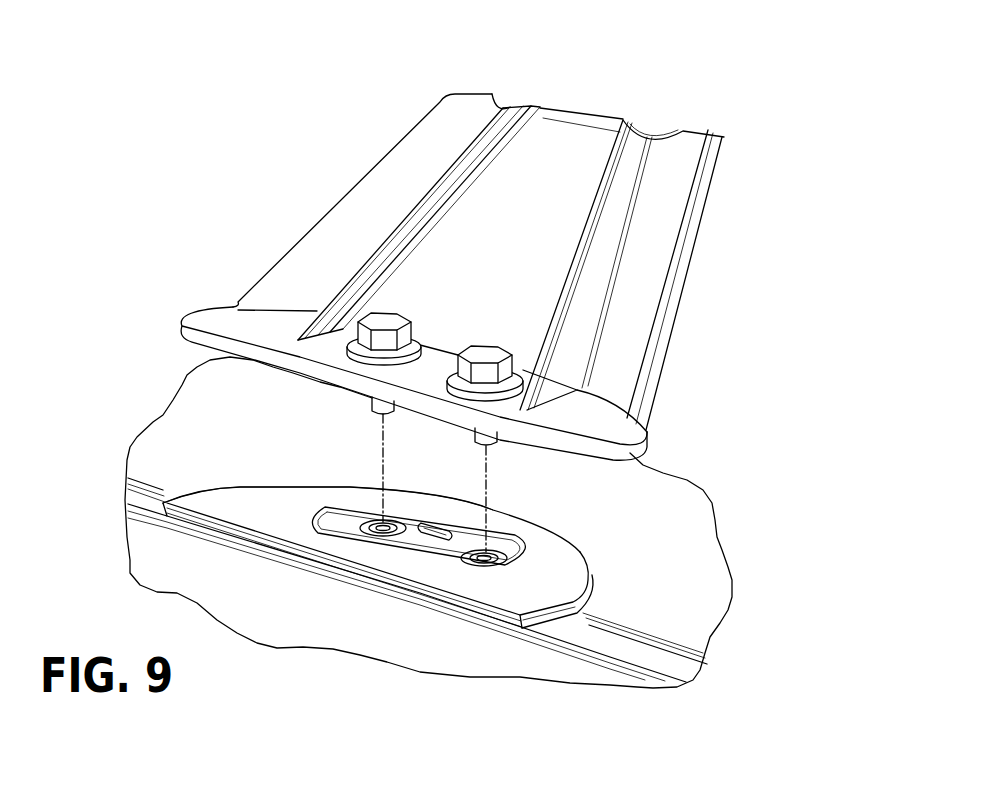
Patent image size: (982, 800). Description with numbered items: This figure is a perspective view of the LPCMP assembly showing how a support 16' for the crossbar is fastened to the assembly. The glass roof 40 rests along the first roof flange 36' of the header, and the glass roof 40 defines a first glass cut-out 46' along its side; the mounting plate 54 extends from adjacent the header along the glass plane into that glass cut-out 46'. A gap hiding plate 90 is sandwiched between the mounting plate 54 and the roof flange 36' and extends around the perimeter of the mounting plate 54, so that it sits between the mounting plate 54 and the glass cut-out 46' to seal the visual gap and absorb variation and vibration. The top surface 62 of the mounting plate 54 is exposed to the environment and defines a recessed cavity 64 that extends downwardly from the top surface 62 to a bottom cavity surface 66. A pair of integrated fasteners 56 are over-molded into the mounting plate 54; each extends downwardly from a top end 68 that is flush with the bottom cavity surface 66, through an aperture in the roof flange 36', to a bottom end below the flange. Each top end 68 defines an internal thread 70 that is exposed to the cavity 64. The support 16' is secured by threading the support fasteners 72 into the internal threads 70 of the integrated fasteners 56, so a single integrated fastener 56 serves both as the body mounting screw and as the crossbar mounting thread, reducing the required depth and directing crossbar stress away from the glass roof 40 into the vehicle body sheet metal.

The support 16' is at (475, 277).
The support fastener 72 is at (487, 352).
The glass roof 40 is at (693, 556).
The first roof flange 36' is at (407, 608).
The first glass cut-out 46' is at (634, 654).
The mounting plate 54 is at (555, 563).
The top surface 62 is at (223, 500).
The gap hiding plate 90 is at (594, 597).
The recessed cavity 64 is at (339, 516).
The bottom cavity surface 66 is at (426, 537).
The integrated fastener 56 is at (487, 551).
The internal thread 70 is at (386, 521).
The top end 68 is at (500, 555).